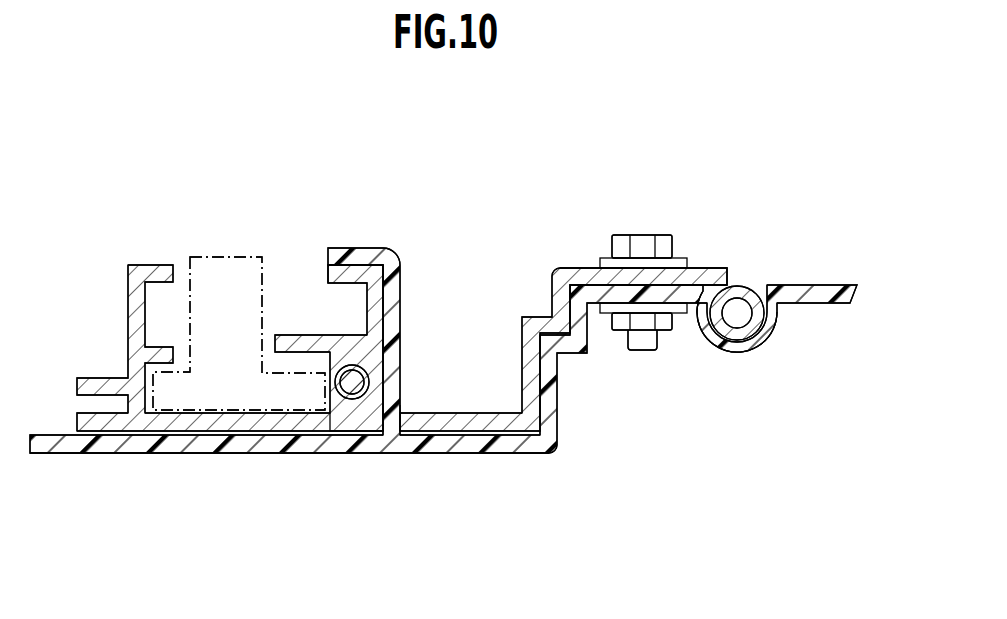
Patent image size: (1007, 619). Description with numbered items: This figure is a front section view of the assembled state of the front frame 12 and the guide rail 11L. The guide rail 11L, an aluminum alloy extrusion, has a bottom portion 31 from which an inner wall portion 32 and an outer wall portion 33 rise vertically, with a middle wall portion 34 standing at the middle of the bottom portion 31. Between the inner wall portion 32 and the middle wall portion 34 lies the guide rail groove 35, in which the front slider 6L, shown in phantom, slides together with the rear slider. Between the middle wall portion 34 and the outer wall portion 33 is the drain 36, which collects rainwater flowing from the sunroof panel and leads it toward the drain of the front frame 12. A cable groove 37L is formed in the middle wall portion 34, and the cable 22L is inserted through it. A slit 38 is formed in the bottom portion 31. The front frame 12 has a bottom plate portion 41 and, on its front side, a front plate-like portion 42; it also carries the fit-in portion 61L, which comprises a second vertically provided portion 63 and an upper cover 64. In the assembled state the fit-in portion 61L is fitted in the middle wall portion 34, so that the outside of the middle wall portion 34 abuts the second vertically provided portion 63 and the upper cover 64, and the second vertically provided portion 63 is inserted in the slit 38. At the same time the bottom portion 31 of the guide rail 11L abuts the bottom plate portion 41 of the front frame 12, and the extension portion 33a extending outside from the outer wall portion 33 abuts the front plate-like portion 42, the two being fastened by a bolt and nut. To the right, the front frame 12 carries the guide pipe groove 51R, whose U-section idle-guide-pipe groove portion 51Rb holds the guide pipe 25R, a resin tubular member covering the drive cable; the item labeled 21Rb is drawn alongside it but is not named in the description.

The guide rail 11L is at (155, 263).
The front slider 6L is at (232, 257).
The inner wall portion 32 is at (128, 290).
The middle wall portion 34 is at (326, 330).
The upper cover 64 is at (344, 262).
The fit-in portion 61L is at (384, 232).
The second vertically provided portion 63 is at (398, 300).
The guide rail groove 35 is at (205, 414).
The slit 38 is at (404, 420).
The drain 36 is at (472, 414).
The outer wall portion 33 is at (551, 297).
The extension portion 33a is at (586, 266).
The front plate-like portion 42 is at (592, 304).
The guide pipe 25R is at (772, 264).
The right frame member 21Rb is at (801, 271).
The guide pipe groove 51R is at (697, 332).
The idle-guide-pipe groove portion 51Rb is at (742, 342).
The bottom portion 31 is at (272, 445).
The cable groove 37L is at (331, 390).
The cable 22L is at (366, 398).
The bottom plate portion 41 is at (345, 458).
The front frame 12 is at (495, 502).